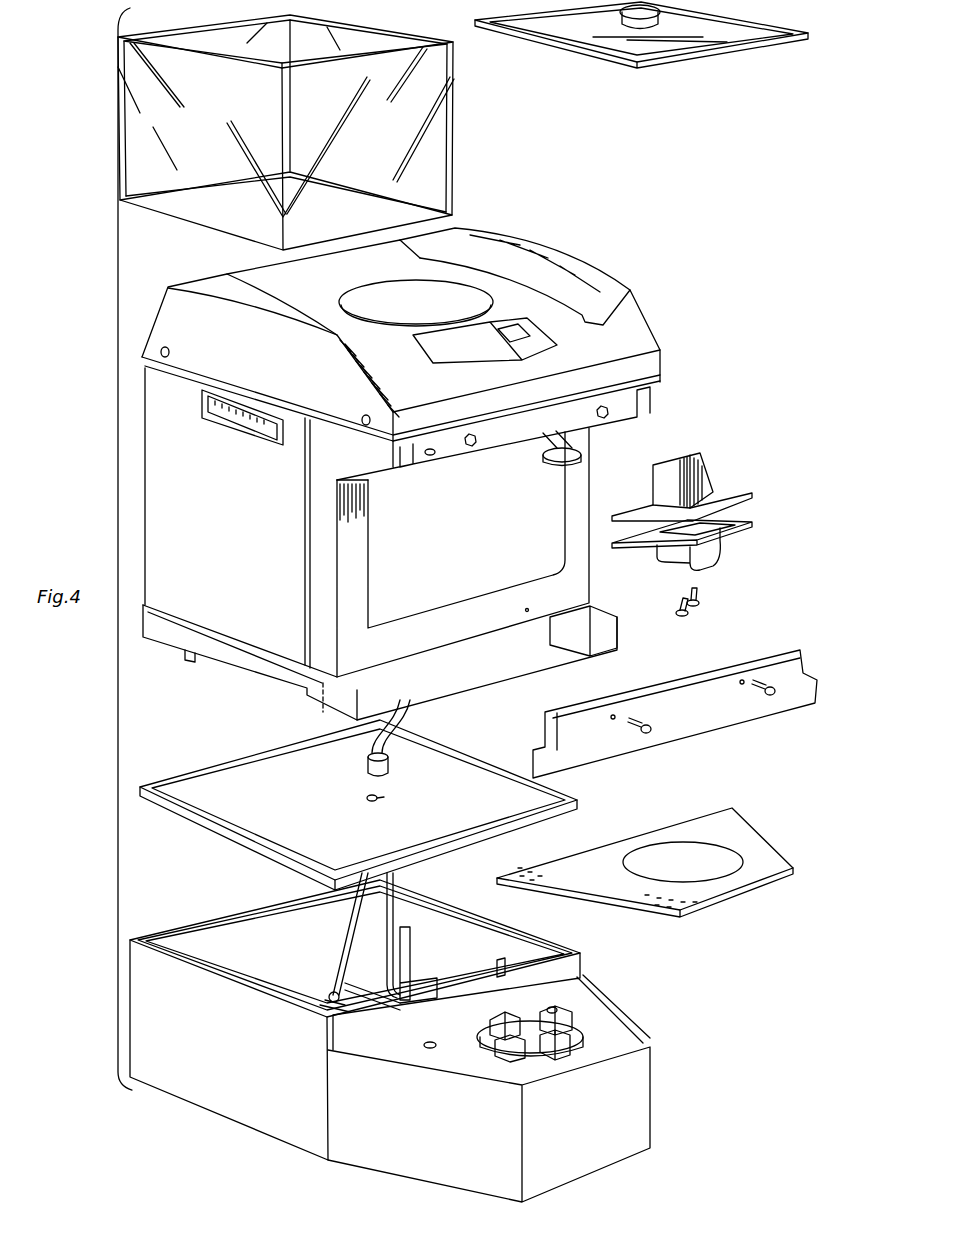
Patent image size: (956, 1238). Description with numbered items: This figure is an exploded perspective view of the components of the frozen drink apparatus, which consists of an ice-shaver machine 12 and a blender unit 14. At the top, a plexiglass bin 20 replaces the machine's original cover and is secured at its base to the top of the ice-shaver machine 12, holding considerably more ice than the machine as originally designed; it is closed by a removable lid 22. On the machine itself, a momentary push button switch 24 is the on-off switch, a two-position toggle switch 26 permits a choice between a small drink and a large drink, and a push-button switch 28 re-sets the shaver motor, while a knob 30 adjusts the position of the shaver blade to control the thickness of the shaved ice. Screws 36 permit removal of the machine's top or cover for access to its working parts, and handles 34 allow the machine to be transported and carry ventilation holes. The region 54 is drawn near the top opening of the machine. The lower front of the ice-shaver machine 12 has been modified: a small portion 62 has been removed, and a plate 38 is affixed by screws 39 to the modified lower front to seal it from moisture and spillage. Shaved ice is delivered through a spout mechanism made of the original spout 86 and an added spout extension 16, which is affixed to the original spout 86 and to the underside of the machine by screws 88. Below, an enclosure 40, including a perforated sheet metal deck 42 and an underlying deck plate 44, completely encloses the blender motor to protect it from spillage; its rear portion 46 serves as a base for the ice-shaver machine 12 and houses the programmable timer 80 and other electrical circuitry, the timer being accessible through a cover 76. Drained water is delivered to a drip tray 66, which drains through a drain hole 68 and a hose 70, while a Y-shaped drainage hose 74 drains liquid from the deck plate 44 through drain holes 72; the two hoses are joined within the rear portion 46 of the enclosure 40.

The ice-shaver machine 12 is at (389, 446).
The blender unit 14 is at (590, 1026).
The spout extension 16 is at (718, 546).
The bin 20 is at (447, 168).
The removable lid 22 is at (660, 47).
The momentary push button switch 24 is at (473, 447).
The two-position toggle switch 26 is at (610, 417).
The push-button switch 28 is at (430, 458).
The knob 30 is at (581, 452).
The handle 34 is at (247, 428).
The screws 36 is at (163, 347).
The plate 38 is at (675, 722).
The screws 39 is at (643, 735).
The enclosure 40 is at (635, 1090).
The perforated sheet metal deck 42 is at (745, 833).
The deck plate 44 is at (625, 1041).
The rear portion of enclosure 46 is at (418, 1032).
The circular opening 54 is at (447, 275).
The small portion of lower front 62 is at (337, 707).
The drip tray 66 is at (358, 795).
The drain hole 68 is at (385, 800).
The hose 70 is at (350, 927).
The drain holes 72 is at (428, 1048).
The Y-shaped drainage hose 74 is at (328, 1005).
The cover 76 is at (453, 950).
The programmable timer 80 is at (412, 982).
The original spout 86 is at (705, 470).
The screws 88 is at (690, 608).